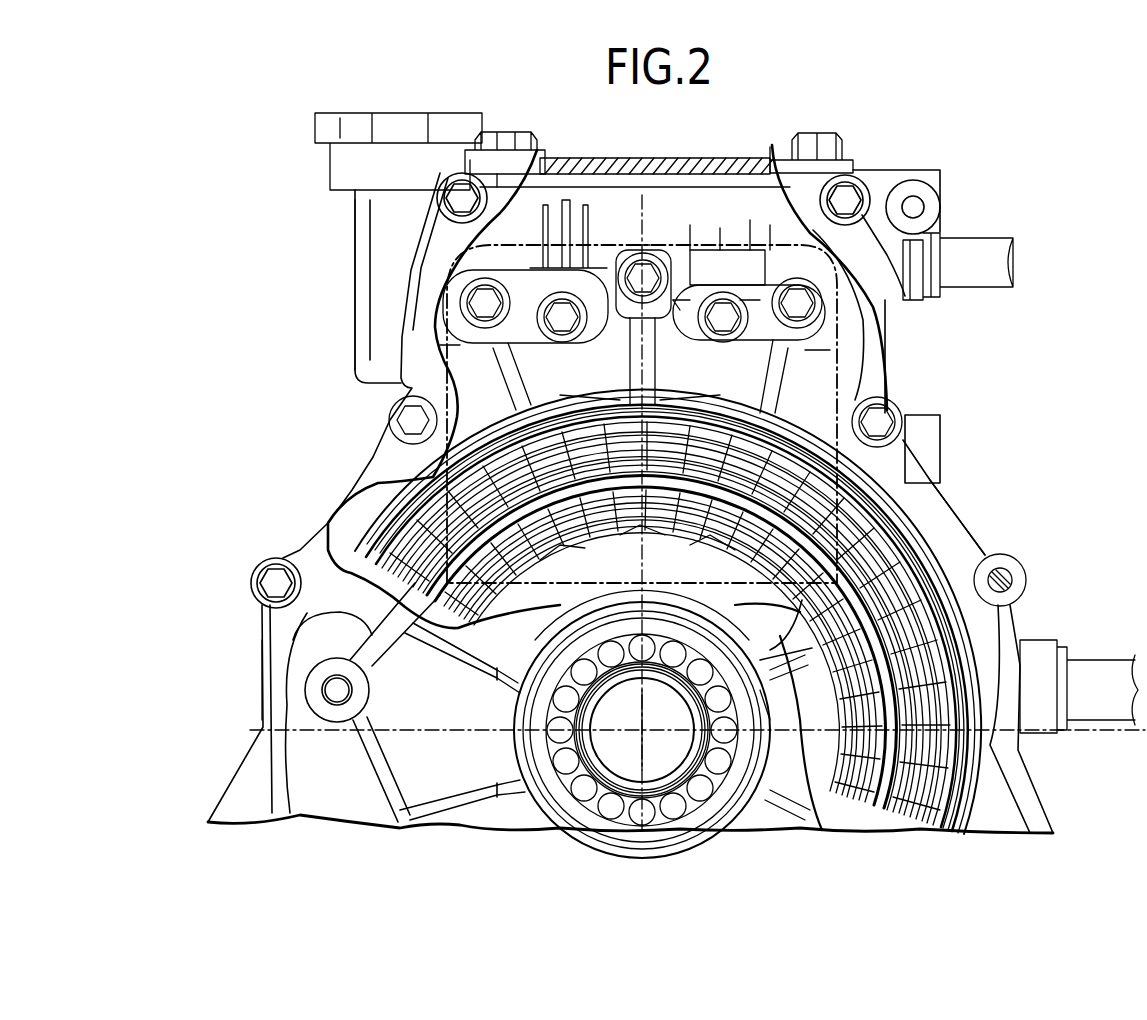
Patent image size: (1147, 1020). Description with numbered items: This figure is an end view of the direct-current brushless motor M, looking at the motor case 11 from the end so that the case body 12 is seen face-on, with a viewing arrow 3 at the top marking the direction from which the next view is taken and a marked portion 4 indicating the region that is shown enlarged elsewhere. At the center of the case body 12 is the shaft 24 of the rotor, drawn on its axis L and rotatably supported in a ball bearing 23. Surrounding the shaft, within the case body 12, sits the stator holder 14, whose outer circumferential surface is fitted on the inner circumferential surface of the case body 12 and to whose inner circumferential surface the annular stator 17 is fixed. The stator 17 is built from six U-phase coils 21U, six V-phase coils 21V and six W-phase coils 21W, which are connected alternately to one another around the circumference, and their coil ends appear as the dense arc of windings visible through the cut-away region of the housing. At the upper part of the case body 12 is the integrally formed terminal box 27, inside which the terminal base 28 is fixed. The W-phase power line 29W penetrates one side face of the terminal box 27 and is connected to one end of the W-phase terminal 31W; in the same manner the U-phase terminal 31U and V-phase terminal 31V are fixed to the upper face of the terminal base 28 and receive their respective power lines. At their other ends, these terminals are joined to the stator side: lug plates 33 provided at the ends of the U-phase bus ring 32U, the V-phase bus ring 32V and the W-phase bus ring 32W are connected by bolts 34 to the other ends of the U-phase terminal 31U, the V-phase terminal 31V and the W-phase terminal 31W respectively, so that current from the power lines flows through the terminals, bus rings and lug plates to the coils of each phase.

The arrow 3 is at (642, 178).
The portion 4 is at (597, 232).
The motor case 11 is at (268, 532).
The case body 12 is at (1000, 620).
The stator holder 14 is at (837, 393).
The stator 17 is at (955, 550).
The U-phase coils 21U is at (570, 545).
The V-phase coils 21V is at (638, 530).
The W-phase coils 21W is at (708, 555).
The ball bearing 23 is at (740, 708).
The shaft 24 is at (608, 675).
The terminal box 27 is at (433, 231).
The terminal base 28 is at (680, 276).
The W-phase power line 29W is at (982, 250).
The U-phase terminal 31U is at (497, 178).
The V-phase terminal 31V is at (645, 243).
The W-phase terminal 31W is at (675, 300).
The U-phase bus ring 32U is at (450, 415).
The V-phase bus ring 32V is at (632, 381).
The W-phase bus ring 32W is at (648, 381).
The lug plate 33 is at (440, 345).
The bolt 34 is at (475, 303).
The axis line L is at (642, 733).
The direct-current brushless motor M is at (1018, 440).